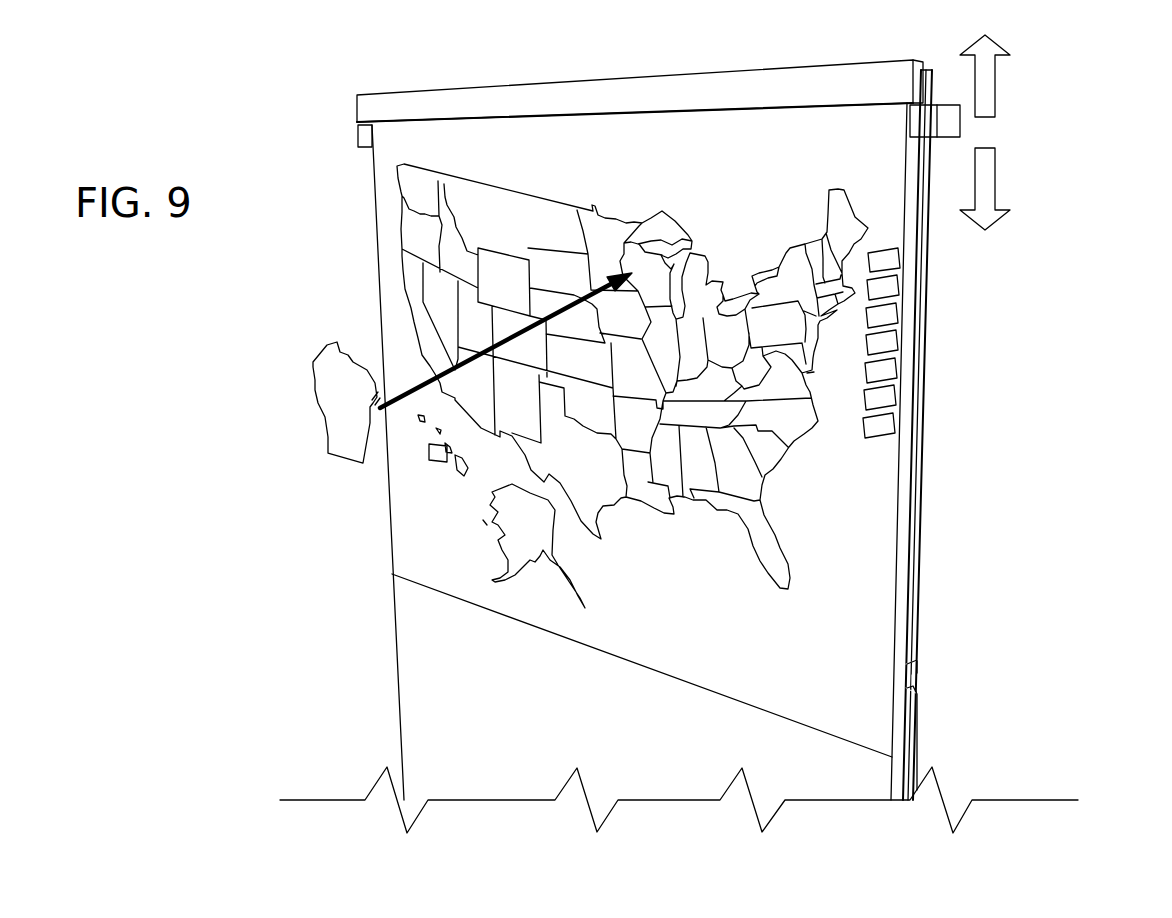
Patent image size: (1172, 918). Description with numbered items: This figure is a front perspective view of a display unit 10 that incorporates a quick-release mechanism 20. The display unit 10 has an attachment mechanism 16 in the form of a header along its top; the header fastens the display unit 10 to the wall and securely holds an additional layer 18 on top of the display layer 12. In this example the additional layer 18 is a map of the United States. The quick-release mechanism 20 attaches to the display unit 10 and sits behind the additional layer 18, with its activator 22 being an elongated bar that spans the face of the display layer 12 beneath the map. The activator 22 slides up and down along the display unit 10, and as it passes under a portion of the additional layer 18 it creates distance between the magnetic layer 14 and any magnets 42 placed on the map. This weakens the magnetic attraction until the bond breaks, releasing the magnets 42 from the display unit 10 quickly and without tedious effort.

The display unit 10 is at (1070, 98).
The display layer 12 is at (447, 670).
The magnetic layer 14 is at (915, 673).
The attachment mechanism 16 is at (492, 84).
The additional layer 18 is at (400, 215).
The quick-release mechanism 20 is at (945, 82).
The activator 22 is at (958, 124).
The magnets 42 is at (325, 392).